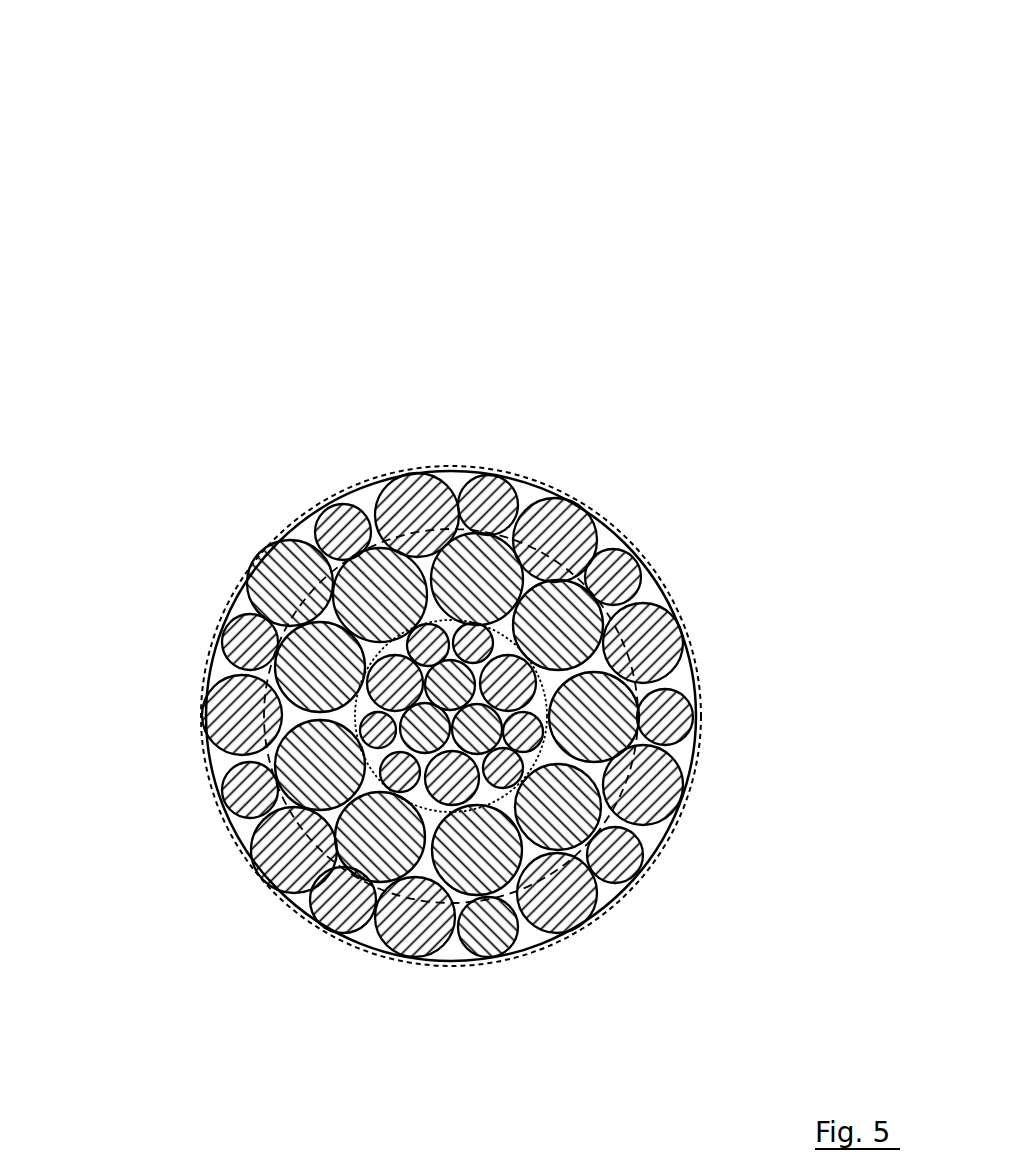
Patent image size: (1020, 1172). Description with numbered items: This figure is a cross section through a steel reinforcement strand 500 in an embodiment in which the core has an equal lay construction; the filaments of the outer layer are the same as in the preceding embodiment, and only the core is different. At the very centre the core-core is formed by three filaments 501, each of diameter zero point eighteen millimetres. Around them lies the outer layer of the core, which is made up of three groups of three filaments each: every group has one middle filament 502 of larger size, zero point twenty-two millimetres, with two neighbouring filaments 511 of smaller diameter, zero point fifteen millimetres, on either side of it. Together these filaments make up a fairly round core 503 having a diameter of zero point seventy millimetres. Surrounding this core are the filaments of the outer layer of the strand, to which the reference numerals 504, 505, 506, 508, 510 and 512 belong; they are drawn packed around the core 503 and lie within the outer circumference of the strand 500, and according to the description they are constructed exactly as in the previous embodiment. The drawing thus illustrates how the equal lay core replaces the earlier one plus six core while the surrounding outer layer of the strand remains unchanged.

The cable 500 is at (172, 142).
The filaments 501 is at (551, 857).
The middle filament 502 is at (639, 611).
The core 503 is at (581, 723).
The middle layer strand 504 is at (651, 833).
The outer layer strand 505 is at (273, 904).
The outer layer strand 506 is at (181, 707).
The outer layer small strand 508 is at (183, 797).
The outer layer small strand 510 is at (274, 501).
The neighboring filaments 511 is at (587, 521).
The outer layer large strand 512 is at (342, 474).